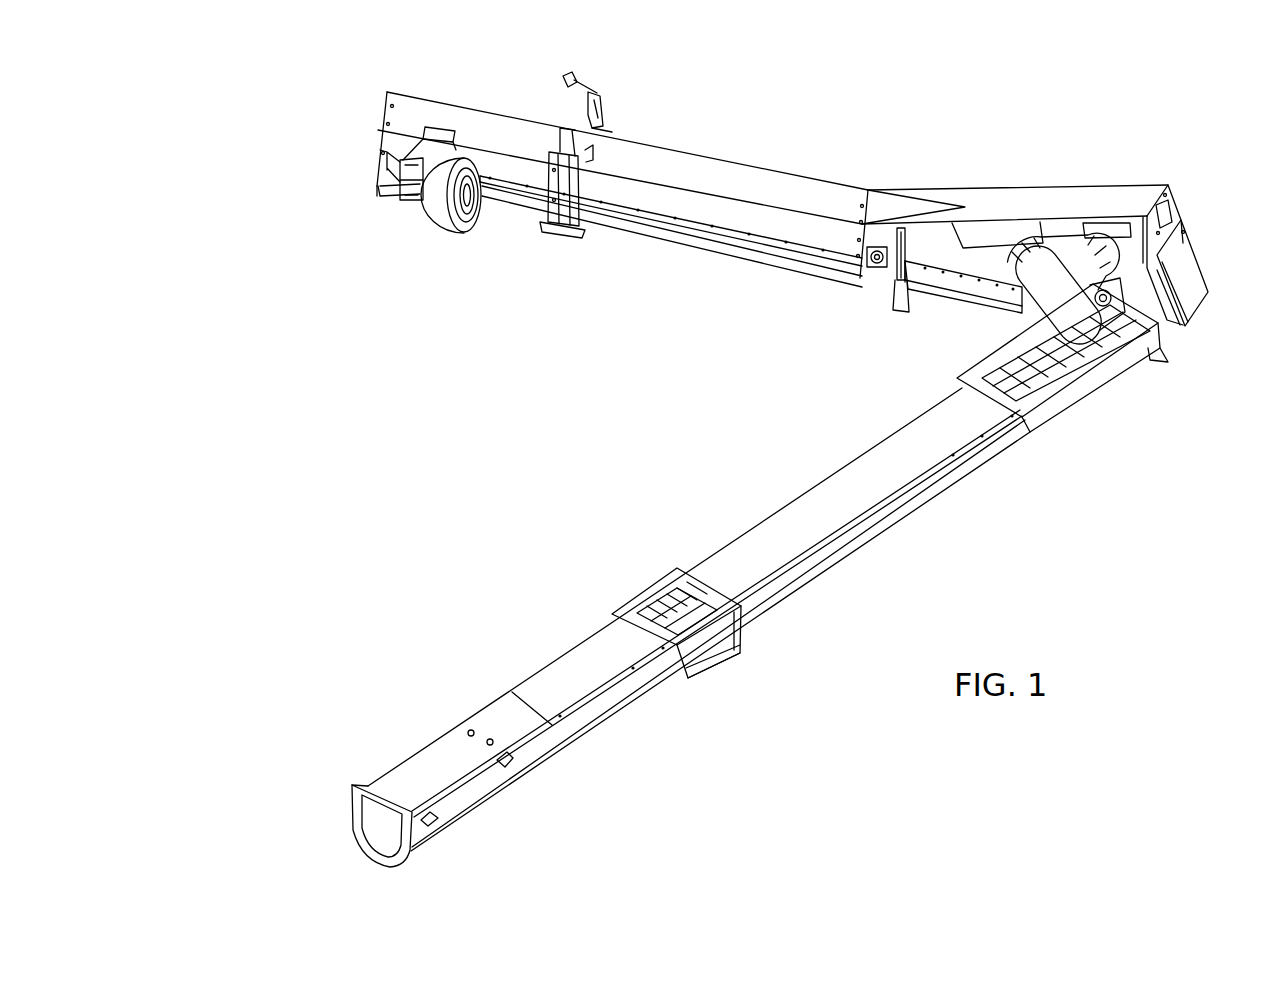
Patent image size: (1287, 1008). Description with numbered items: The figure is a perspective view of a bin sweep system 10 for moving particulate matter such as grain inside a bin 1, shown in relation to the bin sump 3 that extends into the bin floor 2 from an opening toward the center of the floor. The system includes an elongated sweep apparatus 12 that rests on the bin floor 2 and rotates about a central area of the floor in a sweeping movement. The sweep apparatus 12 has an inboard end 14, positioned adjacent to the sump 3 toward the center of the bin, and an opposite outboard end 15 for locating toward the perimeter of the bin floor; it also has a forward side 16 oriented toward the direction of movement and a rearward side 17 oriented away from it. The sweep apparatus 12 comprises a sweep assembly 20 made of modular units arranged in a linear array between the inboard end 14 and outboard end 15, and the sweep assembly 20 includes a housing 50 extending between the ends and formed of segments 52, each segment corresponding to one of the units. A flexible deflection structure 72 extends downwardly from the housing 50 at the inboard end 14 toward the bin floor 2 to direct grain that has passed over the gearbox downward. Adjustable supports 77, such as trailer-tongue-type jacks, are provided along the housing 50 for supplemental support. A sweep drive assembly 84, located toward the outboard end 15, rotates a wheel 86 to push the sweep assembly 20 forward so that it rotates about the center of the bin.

The bin 1 is at (294, 235).
The bin floor 2 is at (972, 377).
The bin sump 3 is at (976, 343).
The bin sweep system 10 is at (448, 438).
The sweep apparatus 12 is at (920, 165).
The inboard end 14 is at (1156, 165).
The outboard end 15 is at (361, 196).
The forward side 16 is at (767, 160).
The rearward side 17 is at (768, 228).
The sweep assembly 20 is at (655, 270).
The housing 50 is at (655, 157).
The segments 52 is at (509, 124).
The deflection structure 72 is at (1190, 263).
The supports 77 is at (552, 197).
The sweep drive assembly 84 is at (441, 258).
The wheel 86 is at (432, 212).